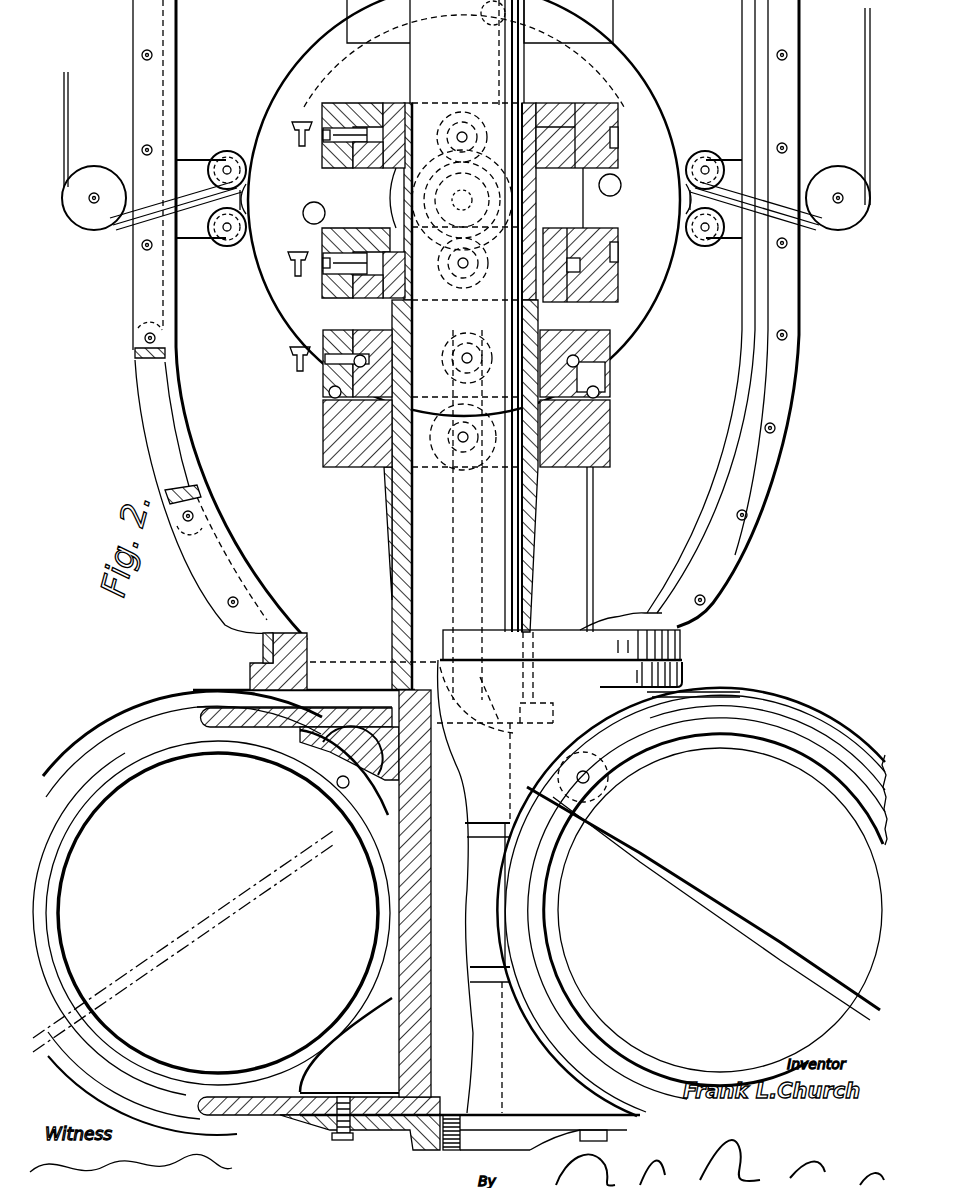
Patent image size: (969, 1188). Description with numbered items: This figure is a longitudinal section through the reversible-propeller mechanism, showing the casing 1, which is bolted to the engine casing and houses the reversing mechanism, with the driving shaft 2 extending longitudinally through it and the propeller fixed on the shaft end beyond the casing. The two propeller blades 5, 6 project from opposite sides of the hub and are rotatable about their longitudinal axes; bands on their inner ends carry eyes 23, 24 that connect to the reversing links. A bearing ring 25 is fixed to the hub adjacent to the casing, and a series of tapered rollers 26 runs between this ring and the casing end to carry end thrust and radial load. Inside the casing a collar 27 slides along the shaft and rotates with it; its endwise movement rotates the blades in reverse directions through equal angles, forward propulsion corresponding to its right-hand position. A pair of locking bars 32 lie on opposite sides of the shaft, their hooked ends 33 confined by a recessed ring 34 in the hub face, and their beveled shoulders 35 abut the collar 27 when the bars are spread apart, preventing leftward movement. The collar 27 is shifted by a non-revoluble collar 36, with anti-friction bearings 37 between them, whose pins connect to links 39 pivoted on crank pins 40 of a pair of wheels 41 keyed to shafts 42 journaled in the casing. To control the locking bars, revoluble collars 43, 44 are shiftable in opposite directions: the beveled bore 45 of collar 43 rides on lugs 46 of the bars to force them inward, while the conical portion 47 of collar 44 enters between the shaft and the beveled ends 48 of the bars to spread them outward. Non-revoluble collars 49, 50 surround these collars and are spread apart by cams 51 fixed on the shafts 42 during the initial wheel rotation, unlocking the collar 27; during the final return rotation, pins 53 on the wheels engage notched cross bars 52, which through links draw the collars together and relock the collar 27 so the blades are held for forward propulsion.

The casing 1 is at (144, 420).
The driving shaft 2 is at (414, 101).
The propeller blade 5 is at (698, 887).
The propeller blade 6 is at (255, 875).
The eyes 23 is at (579, 755).
The eyes 24 is at (396, 732).
The bearing ring 25 is at (232, 690).
The rollers 26 is at (258, 668).
The collar 27 is at (612, 450).
The locking bars 32 is at (396, 585).
The hooks or lugs 33 is at (387, 688).
The recessed ring or washer 34 is at (372, 688).
The beveled shoulders 35 is at (388, 474).
The non-revoluble collar 36 is at (322, 386).
The anti-friction bearings 37 is at (612, 360).
The links 39 is at (322, 70).
The crank pins 40 is at (490, 18).
The wheels 41 is at (265, 152).
The shafts 42 is at (508, 258).
The collar 43 is at (363, 226).
The collar 44 is at (367, 101).
The beveled interior bore 45 is at (460, 238).
The lugs 46 is at (404, 304).
The conical or beveled portion 47 is at (414, 178).
The beveled ends 48 is at (390, 207).
The non-revoluble collar 49 is at (326, 330).
The non-revoluble collar 50 is at (322, 122).
The cams 51 is at (516, 103).
The cross bars 52 is at (318, 189).
The pins 53 is at (304, 216).